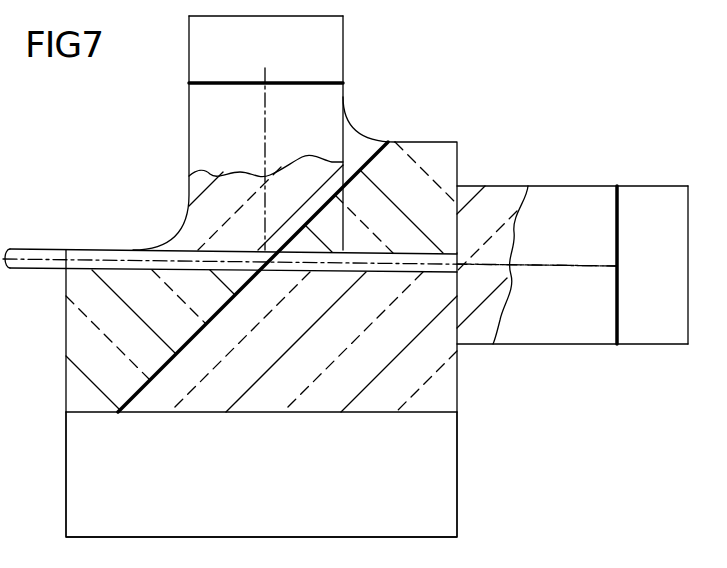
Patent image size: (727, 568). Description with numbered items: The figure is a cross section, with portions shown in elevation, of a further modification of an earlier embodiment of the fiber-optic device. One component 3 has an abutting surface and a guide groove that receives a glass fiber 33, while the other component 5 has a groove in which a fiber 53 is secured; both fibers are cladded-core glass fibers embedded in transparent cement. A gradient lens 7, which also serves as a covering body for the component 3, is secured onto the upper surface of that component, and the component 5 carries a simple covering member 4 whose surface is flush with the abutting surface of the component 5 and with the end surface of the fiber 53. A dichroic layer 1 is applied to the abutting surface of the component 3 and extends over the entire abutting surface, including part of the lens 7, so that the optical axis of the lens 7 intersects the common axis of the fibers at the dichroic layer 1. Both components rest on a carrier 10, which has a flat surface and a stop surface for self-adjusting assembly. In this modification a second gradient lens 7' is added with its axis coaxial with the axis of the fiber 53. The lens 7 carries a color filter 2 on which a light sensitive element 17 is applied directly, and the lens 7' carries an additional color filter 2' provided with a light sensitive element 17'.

The dichroic layer 1 is at (150, 372).
The color filter 2 is at (292, 72).
The color filter 2' is at (602, 285).
The component 3 is at (80, 305).
The covering member 4 is at (417, 158).
The component 5 is at (437, 378).
The gradient lens 7 is at (264, 159).
The second gradient lens 7' is at (572, 285).
The carrier 10 is at (438, 452).
The light sensitive element 17 is at (296, 49).
The light sensitive element 17' is at (661, 285).
The glass fiber 33 is at (62, 255).
The fiber 53 is at (395, 253).